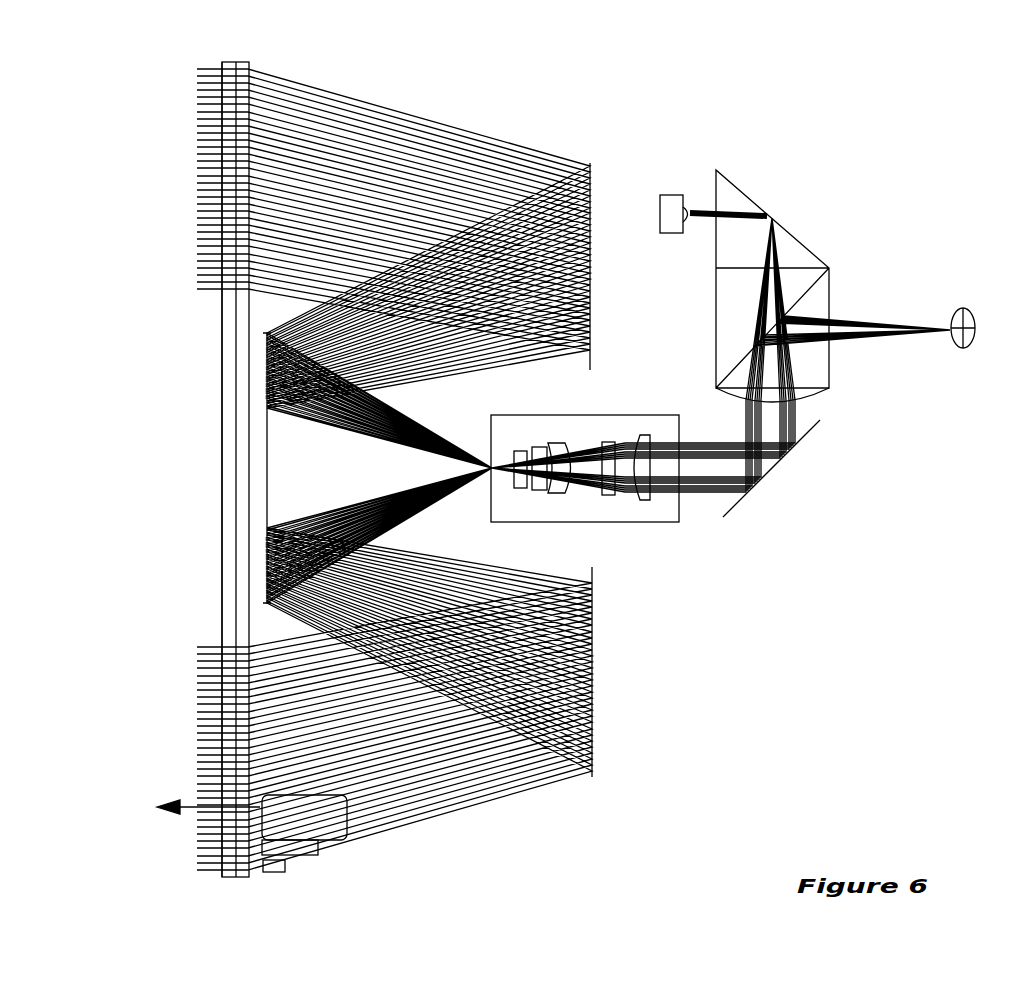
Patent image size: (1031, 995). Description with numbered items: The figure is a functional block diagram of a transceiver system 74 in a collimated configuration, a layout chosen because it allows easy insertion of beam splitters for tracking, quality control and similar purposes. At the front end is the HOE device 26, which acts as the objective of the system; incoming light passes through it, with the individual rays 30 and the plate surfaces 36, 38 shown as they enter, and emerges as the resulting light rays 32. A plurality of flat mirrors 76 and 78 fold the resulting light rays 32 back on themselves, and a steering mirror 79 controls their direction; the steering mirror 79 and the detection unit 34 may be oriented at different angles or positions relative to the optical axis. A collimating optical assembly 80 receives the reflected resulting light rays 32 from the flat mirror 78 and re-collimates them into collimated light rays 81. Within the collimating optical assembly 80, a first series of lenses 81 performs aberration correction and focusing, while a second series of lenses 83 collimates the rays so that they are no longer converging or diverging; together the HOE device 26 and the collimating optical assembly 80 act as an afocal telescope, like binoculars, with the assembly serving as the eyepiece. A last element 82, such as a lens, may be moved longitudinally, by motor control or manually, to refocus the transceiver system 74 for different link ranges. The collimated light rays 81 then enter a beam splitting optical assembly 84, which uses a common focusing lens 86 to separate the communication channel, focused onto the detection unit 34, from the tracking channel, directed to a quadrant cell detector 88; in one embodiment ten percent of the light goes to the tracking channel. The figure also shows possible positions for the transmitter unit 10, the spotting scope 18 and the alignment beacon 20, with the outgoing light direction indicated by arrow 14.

The transmitter unit 10 is at (347, 840).
The light output direction 14 is at (194, 807).
The spotting scope 18 is at (318, 855).
The alignment beacon 20 is at (280, 872).
The HOE device 26 is at (260, 65).
The light rays 30 is at (557, 469).
The resulting light rays 32 is at (484, 126).
The detection unit 34 is at (666, 186).
The plate front surface 36 is at (230, 878).
The plate rear surface 38 is at (244, 878).
The transceiver system 74 is at (928, 616).
The flat mirror 76 is at (594, 752).
The flat mirror 78 is at (267, 470).
The steering mirror 79 is at (742, 511).
The collimating optical assembly 80 is at (684, 526).
The collimated light rays 81 is at (552, 437).
The last element 82 is at (641, 500).
The second series of lenses 83 is at (628, 435).
The beam splitting optical assembly 84 is at (824, 248).
The focusing lens 86 is at (718, 392).
The quadrant cell detector 88 is at (978, 348).